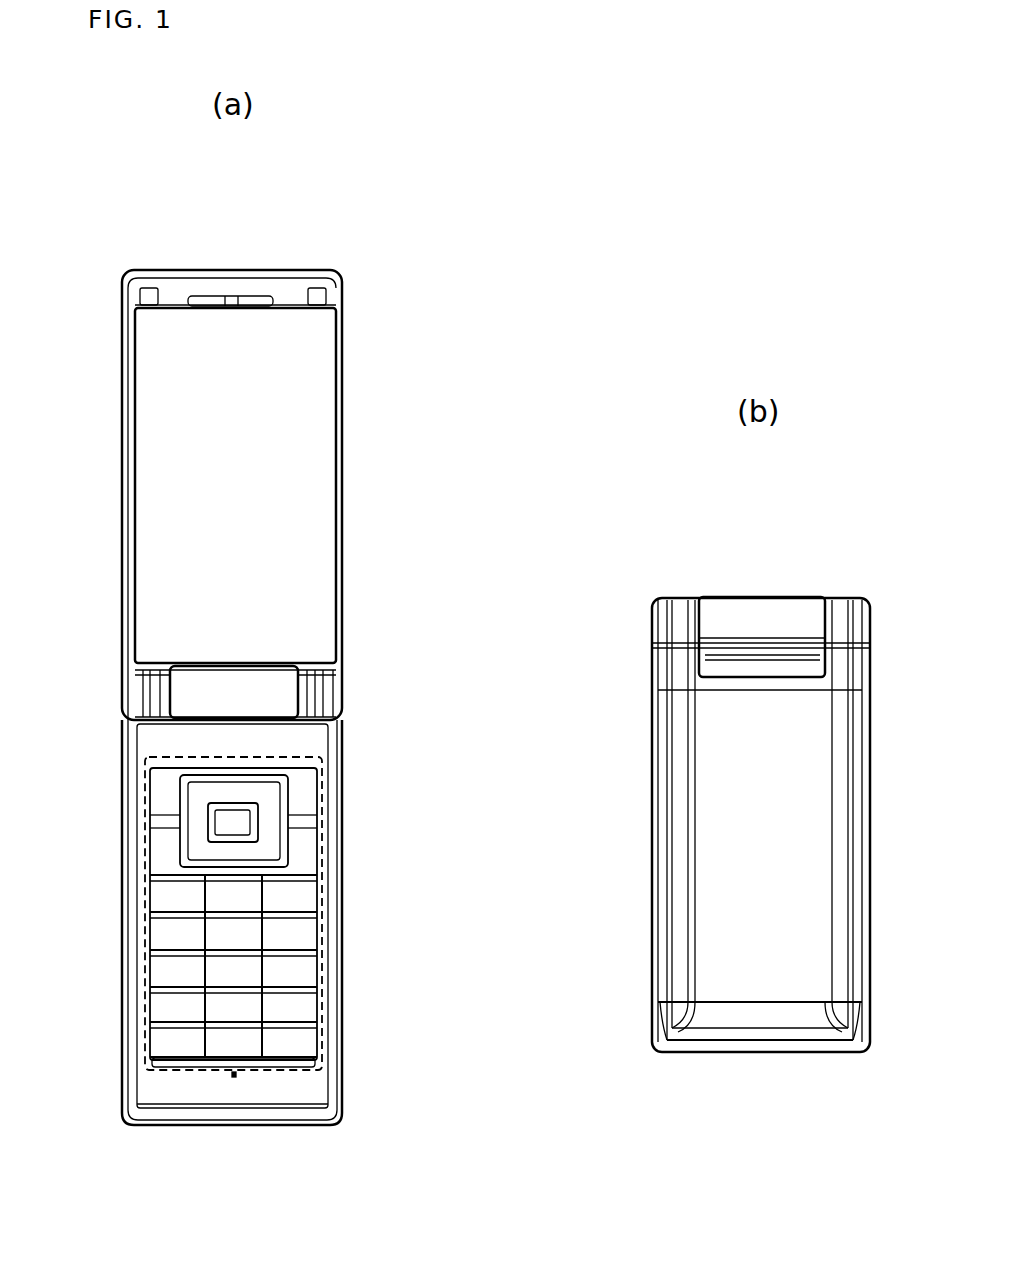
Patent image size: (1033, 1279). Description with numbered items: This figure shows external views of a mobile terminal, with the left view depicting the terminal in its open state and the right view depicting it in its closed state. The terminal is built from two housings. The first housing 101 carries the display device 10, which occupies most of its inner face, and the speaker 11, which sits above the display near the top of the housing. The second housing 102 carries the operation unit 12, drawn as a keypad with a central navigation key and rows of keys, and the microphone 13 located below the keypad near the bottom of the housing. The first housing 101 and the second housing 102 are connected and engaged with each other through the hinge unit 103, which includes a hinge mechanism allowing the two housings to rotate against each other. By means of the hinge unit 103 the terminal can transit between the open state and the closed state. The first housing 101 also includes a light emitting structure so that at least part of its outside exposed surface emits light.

The display device 10 is at (297, 455).
The speaker 11 is at (233, 300).
The operation unit 12 is at (128, 824).
The microphone 13 is at (234, 1077).
The first housing 101 is at (123, 410).
The second housing 102 is at (337, 899).
The hinge unit 103 is at (276, 688).